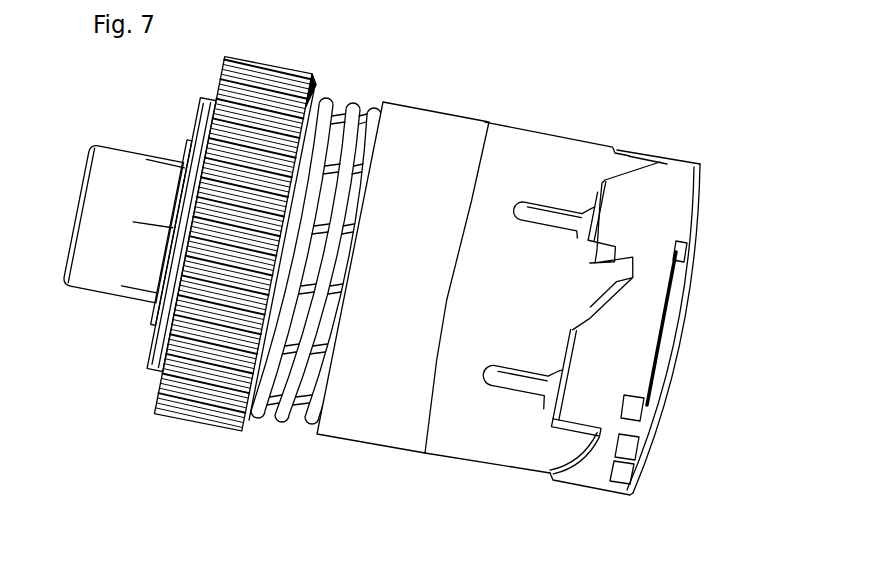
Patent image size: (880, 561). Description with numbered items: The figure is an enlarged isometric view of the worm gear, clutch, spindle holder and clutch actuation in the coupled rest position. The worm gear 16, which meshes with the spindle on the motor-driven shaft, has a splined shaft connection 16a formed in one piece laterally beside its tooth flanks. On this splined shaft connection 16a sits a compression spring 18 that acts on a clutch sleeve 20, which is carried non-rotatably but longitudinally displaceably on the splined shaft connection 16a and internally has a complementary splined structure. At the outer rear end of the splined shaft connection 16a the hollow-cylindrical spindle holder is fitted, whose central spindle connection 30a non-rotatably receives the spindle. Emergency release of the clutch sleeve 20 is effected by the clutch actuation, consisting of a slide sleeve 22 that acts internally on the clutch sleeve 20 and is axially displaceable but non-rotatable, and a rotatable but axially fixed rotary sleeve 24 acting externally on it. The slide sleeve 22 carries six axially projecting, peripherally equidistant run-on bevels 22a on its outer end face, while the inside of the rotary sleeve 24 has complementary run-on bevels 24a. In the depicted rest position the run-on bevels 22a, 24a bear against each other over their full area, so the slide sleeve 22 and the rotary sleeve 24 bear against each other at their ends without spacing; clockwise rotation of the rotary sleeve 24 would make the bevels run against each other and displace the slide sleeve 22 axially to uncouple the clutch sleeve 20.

The worm gear 16 is at (183, 392).
The splined shaft connection 16a is at (297, 395).
The compression spring 18 is at (280, 393).
The clutch sleeve 20 is at (390, 390).
The slide sleeve 22 is at (518, 145).
The run-on bevels 22a is at (590, 302).
The rotary sleeve 24 is at (662, 197).
The run-on bevels of the rotary sleeve 24a is at (598, 318).
The central spindle connection 30a is at (97, 282).